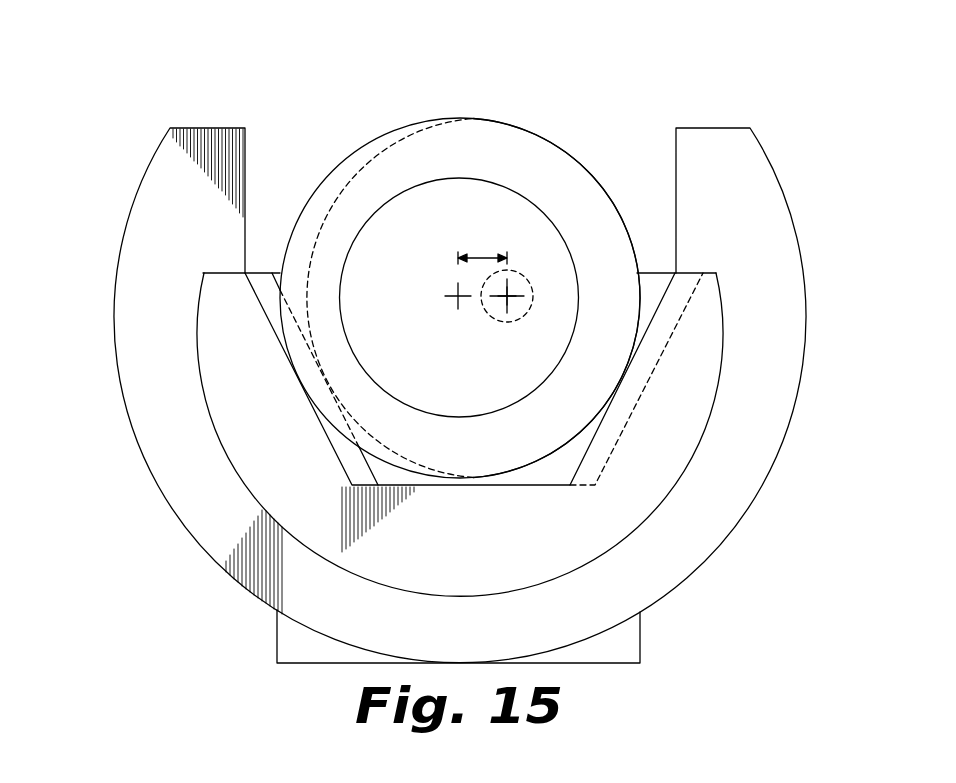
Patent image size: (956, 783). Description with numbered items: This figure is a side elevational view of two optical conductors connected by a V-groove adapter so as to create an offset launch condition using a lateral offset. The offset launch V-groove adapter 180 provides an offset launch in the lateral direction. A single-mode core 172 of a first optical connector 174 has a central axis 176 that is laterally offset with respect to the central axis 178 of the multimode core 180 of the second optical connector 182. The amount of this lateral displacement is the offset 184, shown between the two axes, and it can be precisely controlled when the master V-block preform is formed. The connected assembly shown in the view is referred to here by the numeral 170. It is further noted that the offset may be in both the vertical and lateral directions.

The ferrule assembly 170 is at (620, 80).
The single-mode core 172 is at (500, 322).
The first optical connector 174 is at (588, 150).
The central axis 176 is at (507, 296).
The central axis 178 is at (458, 303).
The multimode core 180 is at (503, 412).
The second optical connector 182 is at (345, 160).
The offset 184 is at (485, 252).